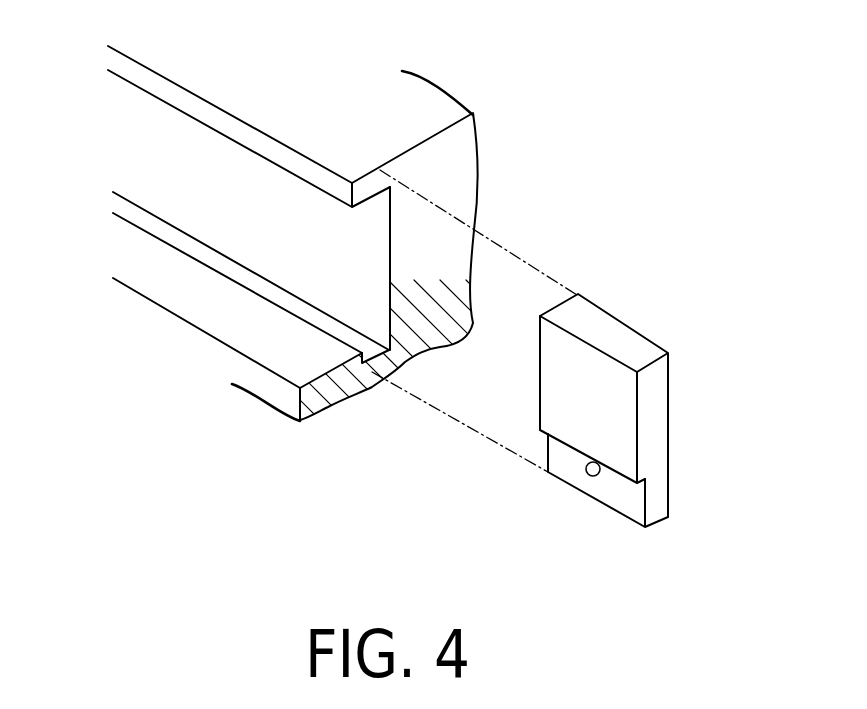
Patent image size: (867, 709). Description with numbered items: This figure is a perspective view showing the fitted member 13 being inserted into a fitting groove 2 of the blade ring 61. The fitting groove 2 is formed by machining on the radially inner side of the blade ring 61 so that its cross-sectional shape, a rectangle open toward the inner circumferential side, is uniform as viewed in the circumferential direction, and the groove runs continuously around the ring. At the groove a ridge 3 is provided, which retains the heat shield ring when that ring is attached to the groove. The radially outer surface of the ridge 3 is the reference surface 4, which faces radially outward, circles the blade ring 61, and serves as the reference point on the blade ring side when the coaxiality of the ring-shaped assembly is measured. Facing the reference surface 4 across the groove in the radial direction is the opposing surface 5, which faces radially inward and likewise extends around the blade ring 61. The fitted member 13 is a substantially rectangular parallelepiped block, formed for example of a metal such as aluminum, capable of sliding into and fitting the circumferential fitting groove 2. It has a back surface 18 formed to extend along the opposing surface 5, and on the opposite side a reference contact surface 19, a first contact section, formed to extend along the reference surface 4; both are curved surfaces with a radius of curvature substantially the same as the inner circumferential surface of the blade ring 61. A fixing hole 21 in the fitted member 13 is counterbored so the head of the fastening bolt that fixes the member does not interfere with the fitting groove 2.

The fitting groove 2 is at (365, 248).
The ridge 3 is at (333, 373).
The reference surface 4 is at (363, 358).
The opposing surface 5 is at (367, 288).
The blade ring 61 is at (417, 100).
The fitted member 13 is at (630, 320).
The back surface 18 is at (668, 418).
The reference contact surface 19 is at (627, 498).
The fixing hole 21 is at (587, 472).